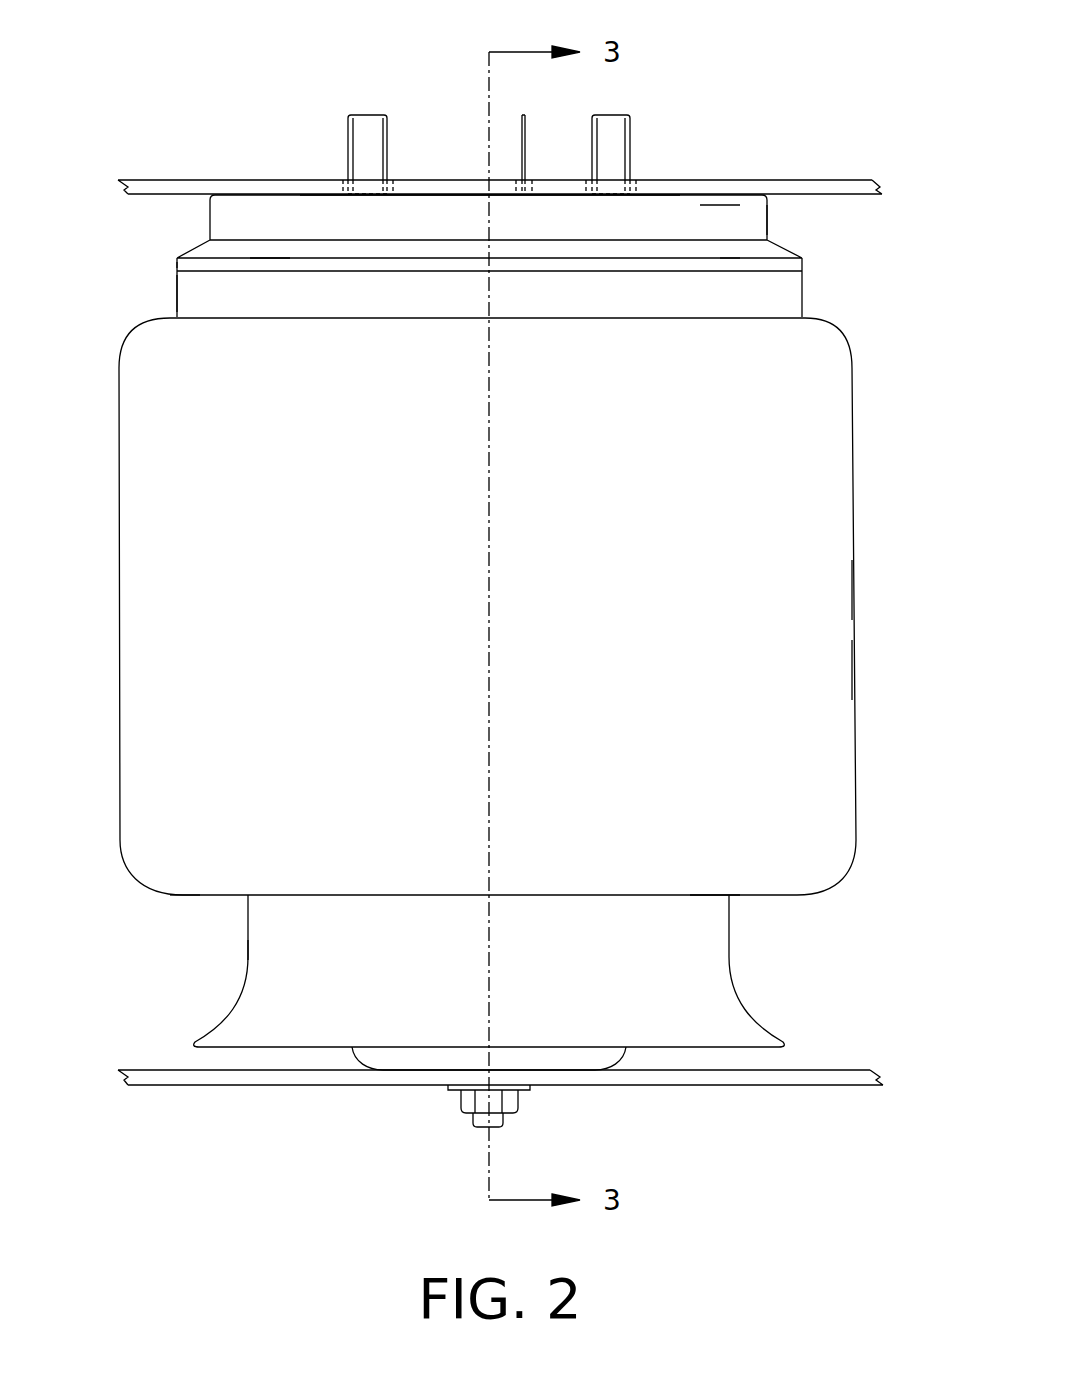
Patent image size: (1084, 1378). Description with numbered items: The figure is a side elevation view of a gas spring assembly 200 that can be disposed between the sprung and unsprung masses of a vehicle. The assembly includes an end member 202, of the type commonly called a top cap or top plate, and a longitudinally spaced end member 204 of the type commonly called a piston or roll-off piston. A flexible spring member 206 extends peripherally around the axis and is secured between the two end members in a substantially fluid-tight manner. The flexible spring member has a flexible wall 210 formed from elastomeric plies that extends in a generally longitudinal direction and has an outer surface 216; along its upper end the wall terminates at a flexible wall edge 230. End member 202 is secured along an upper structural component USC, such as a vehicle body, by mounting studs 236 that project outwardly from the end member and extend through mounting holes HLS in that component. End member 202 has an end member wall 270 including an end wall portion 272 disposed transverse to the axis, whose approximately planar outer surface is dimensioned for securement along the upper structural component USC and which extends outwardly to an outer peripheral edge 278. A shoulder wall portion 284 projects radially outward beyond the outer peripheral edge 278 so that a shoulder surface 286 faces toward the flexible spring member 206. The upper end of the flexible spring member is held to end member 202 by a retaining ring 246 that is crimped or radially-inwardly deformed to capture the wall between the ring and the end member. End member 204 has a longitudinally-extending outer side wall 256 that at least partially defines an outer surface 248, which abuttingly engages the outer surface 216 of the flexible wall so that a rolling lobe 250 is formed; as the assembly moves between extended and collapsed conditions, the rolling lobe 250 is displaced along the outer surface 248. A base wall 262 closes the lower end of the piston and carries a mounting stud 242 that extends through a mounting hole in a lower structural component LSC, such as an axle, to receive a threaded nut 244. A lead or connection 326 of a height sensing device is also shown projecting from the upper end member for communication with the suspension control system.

The gas spring assembly 200 is at (873, 337).
The end member 202 is at (790, 231).
The end member 204 is at (508, 1014).
The flexible spring member 206 is at (502, 604).
The flexible wall 210 is at (820, 595).
The outer surface 216 is at (830, 658).
The flexible wall edge 230 is at (188, 267).
The mounting studs 236 is at (347, 133).
The mounting stud 242 is at (473, 1117).
The threaded nut 244 is at (463, 1101).
The retaining ring 246 is at (176, 301).
The outer surface 248 is at (248, 960).
The rolling lobe 250 is at (183, 895).
The outer side wall 256 is at (693, 932).
The base wall 262 is at (563, 1057).
The end member wall 270 is at (317, 213).
The end wall portion 272 is at (715, 210).
The outer peripheral edge 278 is at (768, 210).
The shoulder wall portion 284 is at (728, 255).
The shoulder surface 286 is at (270, 258).
The lead or connection 326 is at (525, 135).
The upper structural component USC is at (177, 190).
The mounting holes HLS is at (393, 192).
The lower structural component LSC is at (163, 1078).